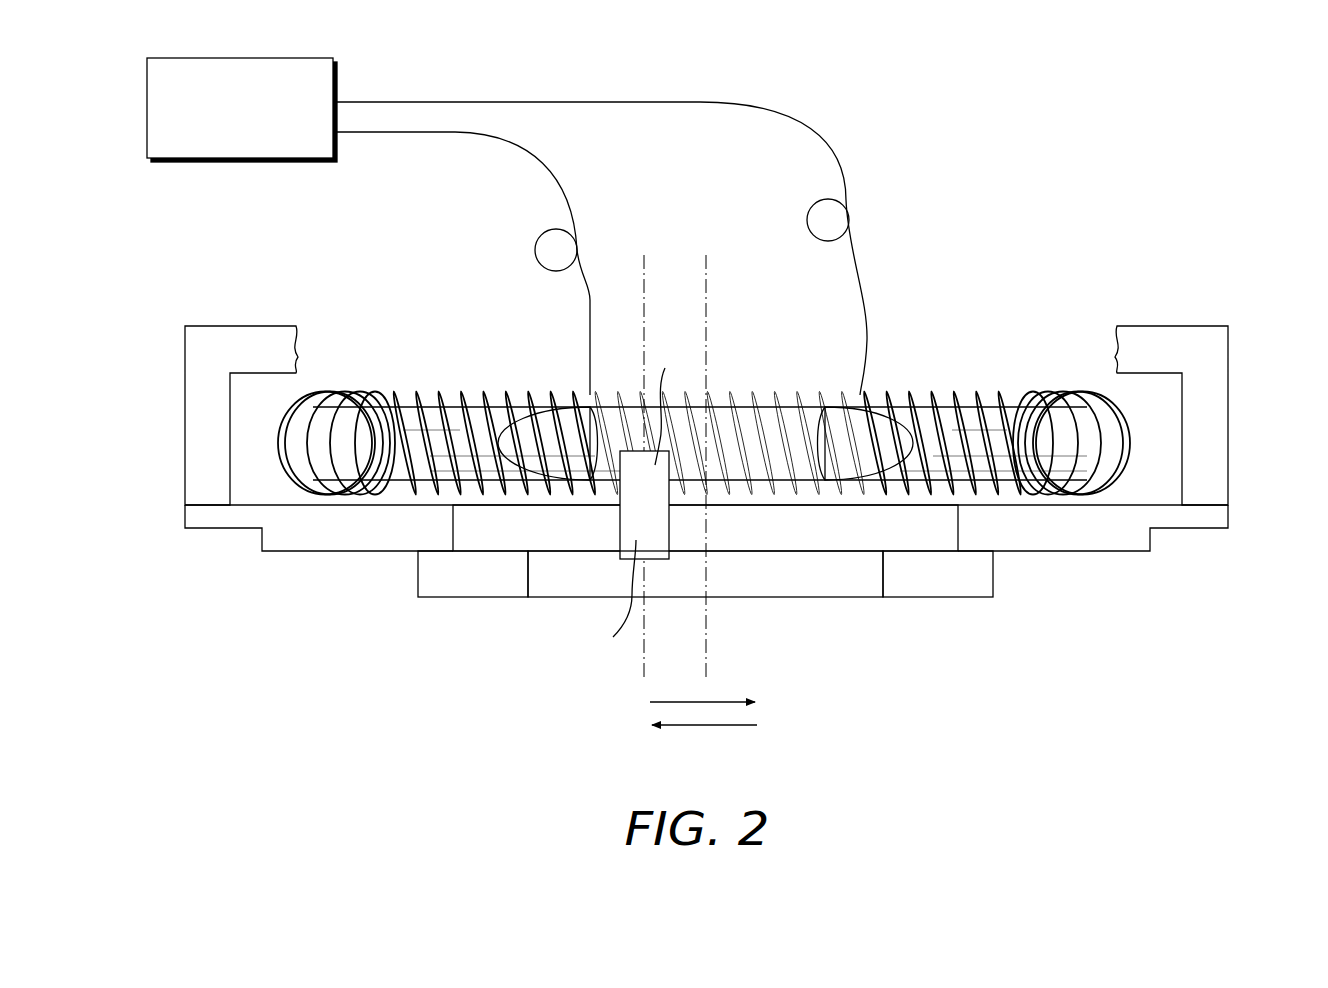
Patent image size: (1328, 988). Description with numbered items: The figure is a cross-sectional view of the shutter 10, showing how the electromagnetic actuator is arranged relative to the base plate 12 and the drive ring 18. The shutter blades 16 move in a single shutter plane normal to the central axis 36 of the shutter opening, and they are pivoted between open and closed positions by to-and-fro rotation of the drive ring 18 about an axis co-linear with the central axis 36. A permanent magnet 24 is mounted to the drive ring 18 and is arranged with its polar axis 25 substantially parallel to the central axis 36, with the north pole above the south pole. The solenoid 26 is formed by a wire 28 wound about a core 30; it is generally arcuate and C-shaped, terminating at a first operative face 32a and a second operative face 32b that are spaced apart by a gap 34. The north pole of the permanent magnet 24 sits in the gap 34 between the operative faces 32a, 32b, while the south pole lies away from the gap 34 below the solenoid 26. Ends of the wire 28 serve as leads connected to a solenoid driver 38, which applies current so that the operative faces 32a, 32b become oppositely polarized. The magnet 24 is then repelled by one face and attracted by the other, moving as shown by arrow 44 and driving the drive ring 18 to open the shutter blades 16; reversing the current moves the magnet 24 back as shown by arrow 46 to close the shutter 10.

The shutter 10 is at (1088, 179).
The base plate 12 is at (1228, 403).
The shutter blades 16 is at (701, 618).
The drive ring 18 is at (921, 555).
The permanent magnet 24 is at (616, 537).
The polar axis 25 is at (644, 260).
The solenoid 26 is at (1010, 380).
The wire 28 is at (490, 101).
The core 30 is at (387, 392).
The first operative face 32a is at (594, 440).
The second operative face 32b is at (813, 405).
The gap 34 is at (742, 390).
The central axis 36 is at (706, 260).
The solenoid driver 38 is at (225, 142).
The arrow 44 is at (727, 702).
The arrow 46 is at (685, 728).